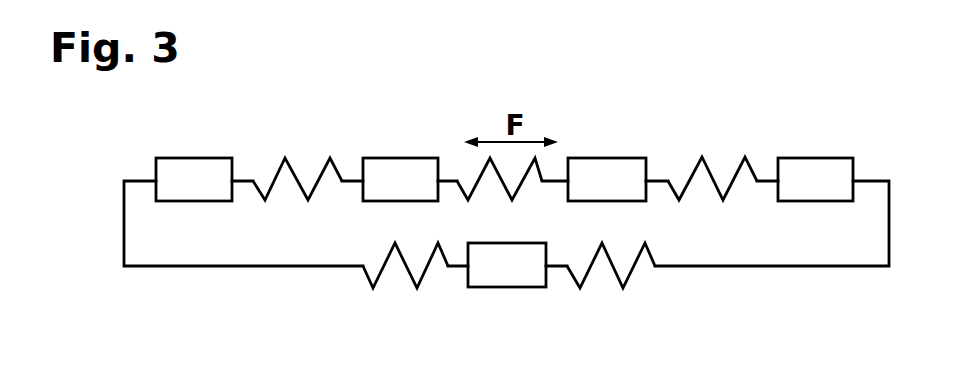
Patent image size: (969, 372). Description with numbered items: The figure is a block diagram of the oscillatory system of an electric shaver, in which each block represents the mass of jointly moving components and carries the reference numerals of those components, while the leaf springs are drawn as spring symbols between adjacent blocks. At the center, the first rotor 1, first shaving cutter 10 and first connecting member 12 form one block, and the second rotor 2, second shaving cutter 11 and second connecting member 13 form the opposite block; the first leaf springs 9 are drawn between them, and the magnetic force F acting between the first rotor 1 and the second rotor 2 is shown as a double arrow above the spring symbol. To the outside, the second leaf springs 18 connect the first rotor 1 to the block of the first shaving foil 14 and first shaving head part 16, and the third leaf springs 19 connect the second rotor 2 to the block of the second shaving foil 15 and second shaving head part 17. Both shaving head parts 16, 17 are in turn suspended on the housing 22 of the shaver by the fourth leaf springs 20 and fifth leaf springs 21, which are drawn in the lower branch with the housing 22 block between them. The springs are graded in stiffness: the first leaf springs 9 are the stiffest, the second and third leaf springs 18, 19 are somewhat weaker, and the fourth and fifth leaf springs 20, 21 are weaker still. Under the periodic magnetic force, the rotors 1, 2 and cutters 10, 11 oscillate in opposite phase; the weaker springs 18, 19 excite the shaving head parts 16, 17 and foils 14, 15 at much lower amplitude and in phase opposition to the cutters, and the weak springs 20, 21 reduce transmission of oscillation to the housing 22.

The first rotor 1 is at (378, 131).
The second rotor 2 is at (615, 131).
The first leaf springs 9 is at (478, 177).
The first shaving cutter 10 is at (378, 131).
The second shaving cutter 11 is at (615, 131).
The first connecting member 12 is at (400, 175).
The second connecting member 13 is at (590, 175).
The first shaving foil 14 is at (125, 195).
The second shaving foil 15 is at (815, 131).
The first shaving head part 16 is at (170, 195).
The second shaving head part 17 is at (802, 177).
The second leaf springs 18 is at (299, 165).
The third leaf springs 19 is at (708, 165).
The fourth leaf springs 20 is at (423, 273).
The fifth leaf springs 21 is at (633, 273).
The housing 22 is at (518, 272).